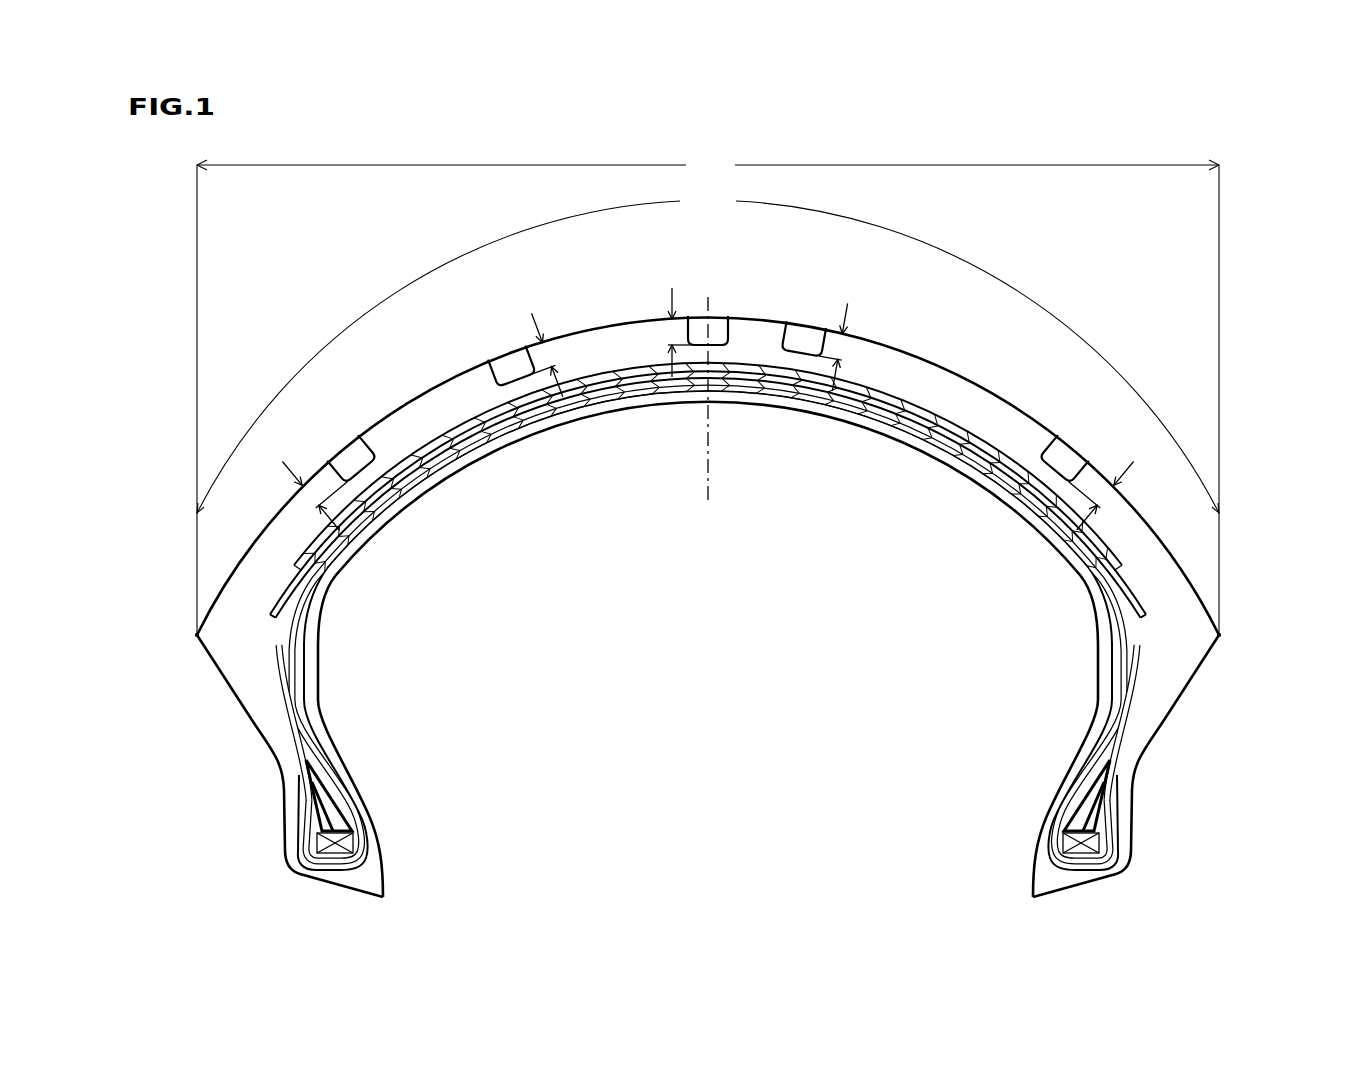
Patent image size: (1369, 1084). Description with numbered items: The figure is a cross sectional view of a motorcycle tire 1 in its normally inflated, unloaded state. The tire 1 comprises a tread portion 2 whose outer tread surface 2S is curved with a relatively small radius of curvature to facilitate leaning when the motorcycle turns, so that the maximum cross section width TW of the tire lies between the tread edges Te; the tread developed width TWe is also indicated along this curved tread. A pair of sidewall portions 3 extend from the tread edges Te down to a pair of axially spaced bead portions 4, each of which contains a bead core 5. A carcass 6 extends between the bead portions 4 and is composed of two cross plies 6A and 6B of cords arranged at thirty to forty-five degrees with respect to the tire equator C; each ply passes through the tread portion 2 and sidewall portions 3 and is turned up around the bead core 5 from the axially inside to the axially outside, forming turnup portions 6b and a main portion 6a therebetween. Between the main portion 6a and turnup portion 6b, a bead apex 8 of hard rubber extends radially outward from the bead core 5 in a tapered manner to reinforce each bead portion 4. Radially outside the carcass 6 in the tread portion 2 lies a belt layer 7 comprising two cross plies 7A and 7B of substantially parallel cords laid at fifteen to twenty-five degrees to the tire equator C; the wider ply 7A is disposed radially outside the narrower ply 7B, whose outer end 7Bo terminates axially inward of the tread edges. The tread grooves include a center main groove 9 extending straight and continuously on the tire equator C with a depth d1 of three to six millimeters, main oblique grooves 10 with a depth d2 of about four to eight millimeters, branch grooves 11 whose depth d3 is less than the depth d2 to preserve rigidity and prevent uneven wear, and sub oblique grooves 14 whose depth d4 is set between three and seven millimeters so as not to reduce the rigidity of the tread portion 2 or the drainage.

The motorcycle tire 1 is at (1233, 300).
The tread portion 2 is at (1085, 296).
The tread surface 2S is at (920, 350).
The sidewall portion 3 is at (230, 720).
The bead portion 4 is at (372, 808).
The bead core 5 is at (352, 850).
The carcass 6 is at (623, 533).
The carcass ply 6A is at (547, 413).
The carcass ply 6B is at (600, 397).
The main portion 6a is at (1122, 650).
The turnup portion 6b is at (1135, 713).
The belt layer 7 is at (827, 498).
The belt ply 7A is at (800, 362).
The belt ply 7B is at (755, 375).
The outer end of inner belt ply 7Bo is at (290, 600).
The bead apex 8 is at (325, 822).
The center main groove 9 is at (698, 333).
The main oblique groove 10 is at (806, 345).
The branch groove 11 is at (506, 368).
The sub oblique groove 14 is at (1067, 470).
The tread edge Te is at (197, 635).
The maximum cross section width TW is at (708, 393).
The tread developed width TWe is at (708, 349).
The tire equator C is at (708, 386).
The depth of the center main groove d1 is at (667, 332).
The depth of the main oblique groove d2 is at (578, 416).
The groove depth of the branch groove d3 is at (549, 357).
The depth of the sub oblique groove d4 is at (1092, 485).